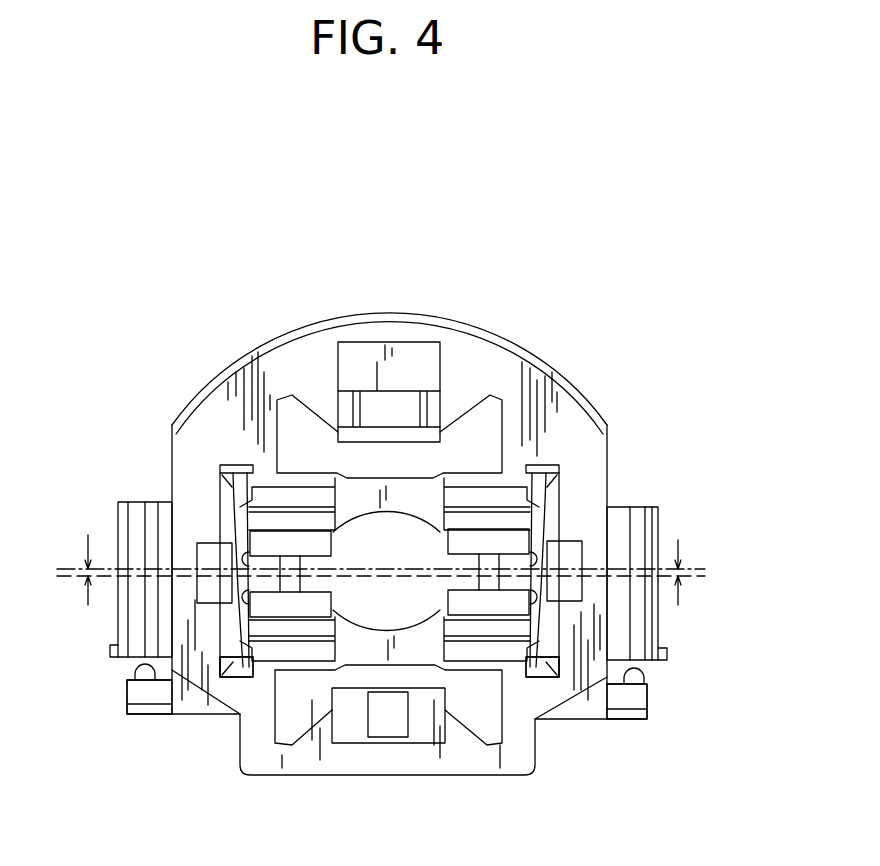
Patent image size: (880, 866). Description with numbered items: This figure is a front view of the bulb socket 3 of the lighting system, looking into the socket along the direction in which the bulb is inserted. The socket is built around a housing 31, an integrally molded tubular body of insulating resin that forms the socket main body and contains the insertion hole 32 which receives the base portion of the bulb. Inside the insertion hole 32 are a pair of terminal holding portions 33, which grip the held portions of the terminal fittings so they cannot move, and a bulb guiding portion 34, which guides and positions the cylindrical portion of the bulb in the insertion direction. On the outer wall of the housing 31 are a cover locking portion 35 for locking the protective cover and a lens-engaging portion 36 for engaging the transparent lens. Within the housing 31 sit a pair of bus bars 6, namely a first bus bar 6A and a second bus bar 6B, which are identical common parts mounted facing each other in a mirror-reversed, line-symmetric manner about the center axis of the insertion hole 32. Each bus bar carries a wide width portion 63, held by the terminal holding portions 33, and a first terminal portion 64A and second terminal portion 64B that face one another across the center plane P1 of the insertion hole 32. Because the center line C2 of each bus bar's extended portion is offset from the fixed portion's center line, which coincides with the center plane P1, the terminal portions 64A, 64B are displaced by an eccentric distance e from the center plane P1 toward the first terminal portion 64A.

The bulb socket 3 is at (205, 325).
The housing 31 is at (271, 338).
The insertion hole 32 is at (404, 650).
The terminal holding portions 33 is at (240, 665).
The bulb guiding portion 34 is at (387, 514).
The cover locking portion 35 is at (133, 502).
The lens-engaging portion 36 is at (647, 696).
The wide width portion 63 is at (218, 550).
The first terminal portion 64A is at (467, 553).
The second terminal portion 64B is at (317, 559).
The bus bar 6 is at (389, 540).
The first bus bar 6A is at (233, 488).
The second bus bar 6B is at (541, 493).
The center line of the extended portion C2 is at (78, 575).
The center plane of the insertion hole P1 is at (700, 578).
The eccentric distance e is at (383, 571).